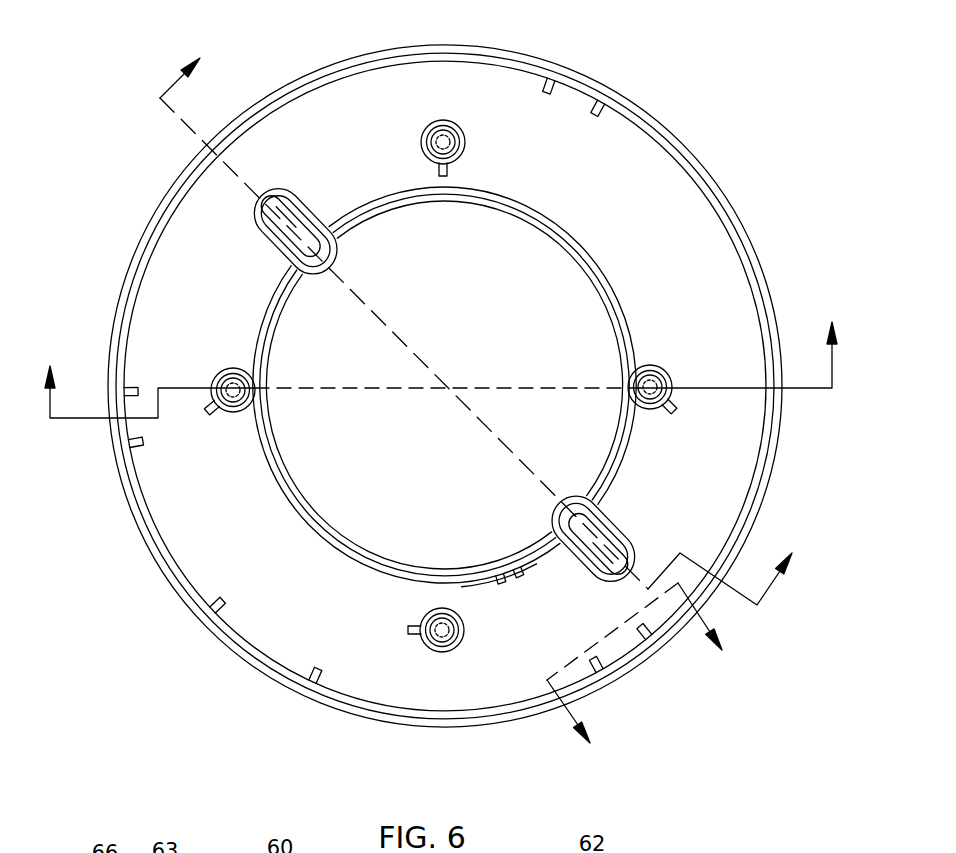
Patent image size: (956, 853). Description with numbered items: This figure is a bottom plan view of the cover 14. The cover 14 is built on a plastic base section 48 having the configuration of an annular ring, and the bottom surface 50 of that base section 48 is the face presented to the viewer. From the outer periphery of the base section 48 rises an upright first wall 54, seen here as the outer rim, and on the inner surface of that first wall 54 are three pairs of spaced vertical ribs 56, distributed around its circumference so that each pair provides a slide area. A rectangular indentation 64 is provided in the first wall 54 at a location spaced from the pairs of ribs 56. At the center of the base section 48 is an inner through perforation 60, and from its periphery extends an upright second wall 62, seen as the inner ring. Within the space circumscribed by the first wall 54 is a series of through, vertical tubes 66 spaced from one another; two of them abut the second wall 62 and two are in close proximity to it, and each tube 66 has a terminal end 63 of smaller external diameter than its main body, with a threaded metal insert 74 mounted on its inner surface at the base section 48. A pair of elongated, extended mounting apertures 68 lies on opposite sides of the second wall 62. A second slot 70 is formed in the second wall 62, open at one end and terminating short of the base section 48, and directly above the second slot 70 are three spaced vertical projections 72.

The cover 14 is at (170, 614).
The base section 48 is at (652, 180).
The bottom surface 50 is at (600, 143).
The upright first wall 54 is at (755, 245).
The spaced vertical ribs 56 is at (598, 98).
The inner through perforation 60 is at (596, 421).
The upright second wall 62 is at (605, 267).
The terminal end 63 is at (430, 650).
The rectangular indentation 64 is at (250, 667).
The vertical tubes 66 is at (422, 137).
The mounting apertures 68 is at (583, 515).
The second slot 70 is at (507, 566).
The vertical projections 72 is at (524, 578).
The threaded metal insert 74 is at (457, 120).